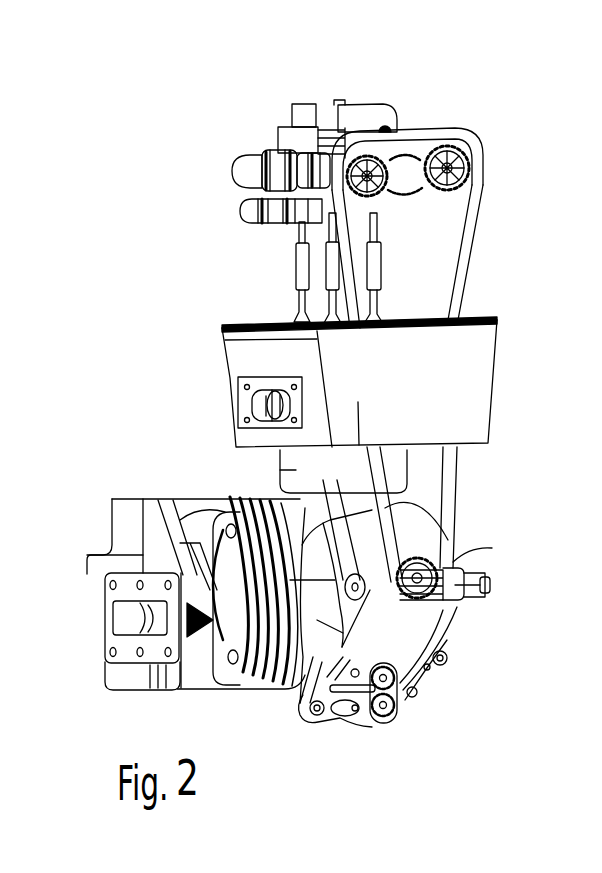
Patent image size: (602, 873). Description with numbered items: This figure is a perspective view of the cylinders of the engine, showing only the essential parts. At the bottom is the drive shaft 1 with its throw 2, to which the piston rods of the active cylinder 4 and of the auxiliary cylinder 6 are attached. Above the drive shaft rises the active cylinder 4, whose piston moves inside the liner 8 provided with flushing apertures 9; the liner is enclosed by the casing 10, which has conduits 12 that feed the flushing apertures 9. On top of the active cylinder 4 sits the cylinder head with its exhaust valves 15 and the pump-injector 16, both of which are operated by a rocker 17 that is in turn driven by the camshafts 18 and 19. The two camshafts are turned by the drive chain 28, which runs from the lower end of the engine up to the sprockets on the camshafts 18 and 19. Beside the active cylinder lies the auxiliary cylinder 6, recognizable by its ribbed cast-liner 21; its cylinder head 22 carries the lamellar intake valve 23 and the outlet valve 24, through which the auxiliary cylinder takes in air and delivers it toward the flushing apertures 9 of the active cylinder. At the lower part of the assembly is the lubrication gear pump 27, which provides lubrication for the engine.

The drive shaft 1 is at (456, 580).
The throw 2 is at (400, 630).
The active cylinder 4 is at (524, 390).
The auxiliary cylinder 6 is at (118, 482).
The liner 8 is at (293, 471).
The flushing apertures 9 is at (270, 386).
The casing 10 is at (483, 410).
The conduits 12 is at (257, 405).
The valves 15 is at (297, 318).
The pump-injector 16 is at (275, 130).
The rocker 17 is at (361, 116).
The camshaft 18 is at (232, 167).
The camshaft 19 is at (478, 156).
The ribbed cast-liner 21 is at (290, 676).
The cylinder head of the auxiliary cylinder 22 is at (93, 583).
The lamellar intake valve 23 is at (150, 621).
The outlet valve 24 is at (155, 502).
The lubrication gear pump 27 is at (418, 683).
The drive chain 28 is at (460, 474).